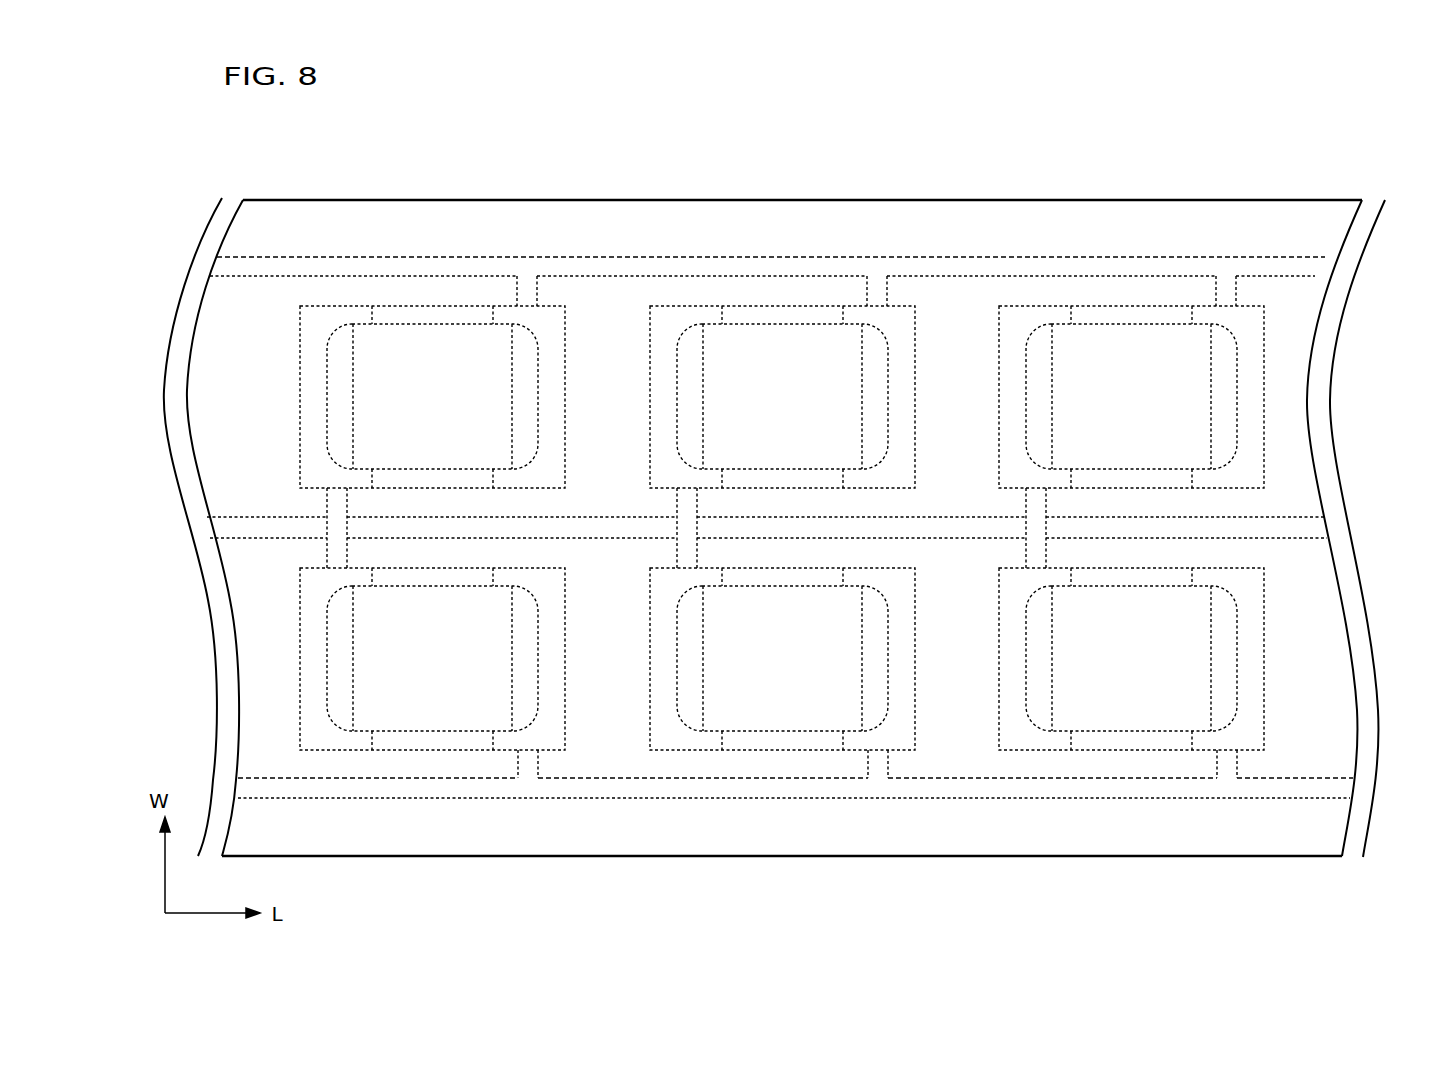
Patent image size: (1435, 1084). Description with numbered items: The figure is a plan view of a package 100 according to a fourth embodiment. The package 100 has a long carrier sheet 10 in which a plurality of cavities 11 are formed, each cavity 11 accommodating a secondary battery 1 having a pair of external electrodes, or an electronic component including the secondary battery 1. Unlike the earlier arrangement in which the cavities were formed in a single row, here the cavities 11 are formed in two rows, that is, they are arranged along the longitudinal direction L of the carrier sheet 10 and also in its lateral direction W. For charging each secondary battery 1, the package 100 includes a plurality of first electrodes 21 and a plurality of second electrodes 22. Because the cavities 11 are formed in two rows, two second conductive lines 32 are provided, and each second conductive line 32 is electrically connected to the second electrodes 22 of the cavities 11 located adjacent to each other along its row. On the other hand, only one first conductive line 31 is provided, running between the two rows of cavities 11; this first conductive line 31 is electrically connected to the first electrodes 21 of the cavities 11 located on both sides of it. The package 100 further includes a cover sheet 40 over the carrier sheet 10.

The secondary battery 1 is at (435, 320).
The cavity 11 is at (398, 306).
The first electrode 21 is at (338, 320).
The second electrode 22 is at (547, 317).
The first conductive line 31 is at (253, 538).
The second conductive line 32 is at (665, 255).
The cover sheet 40 is at (847, 198).
The carrier sheet 10 is at (967, 198).
The package 100 is at (774, 474).